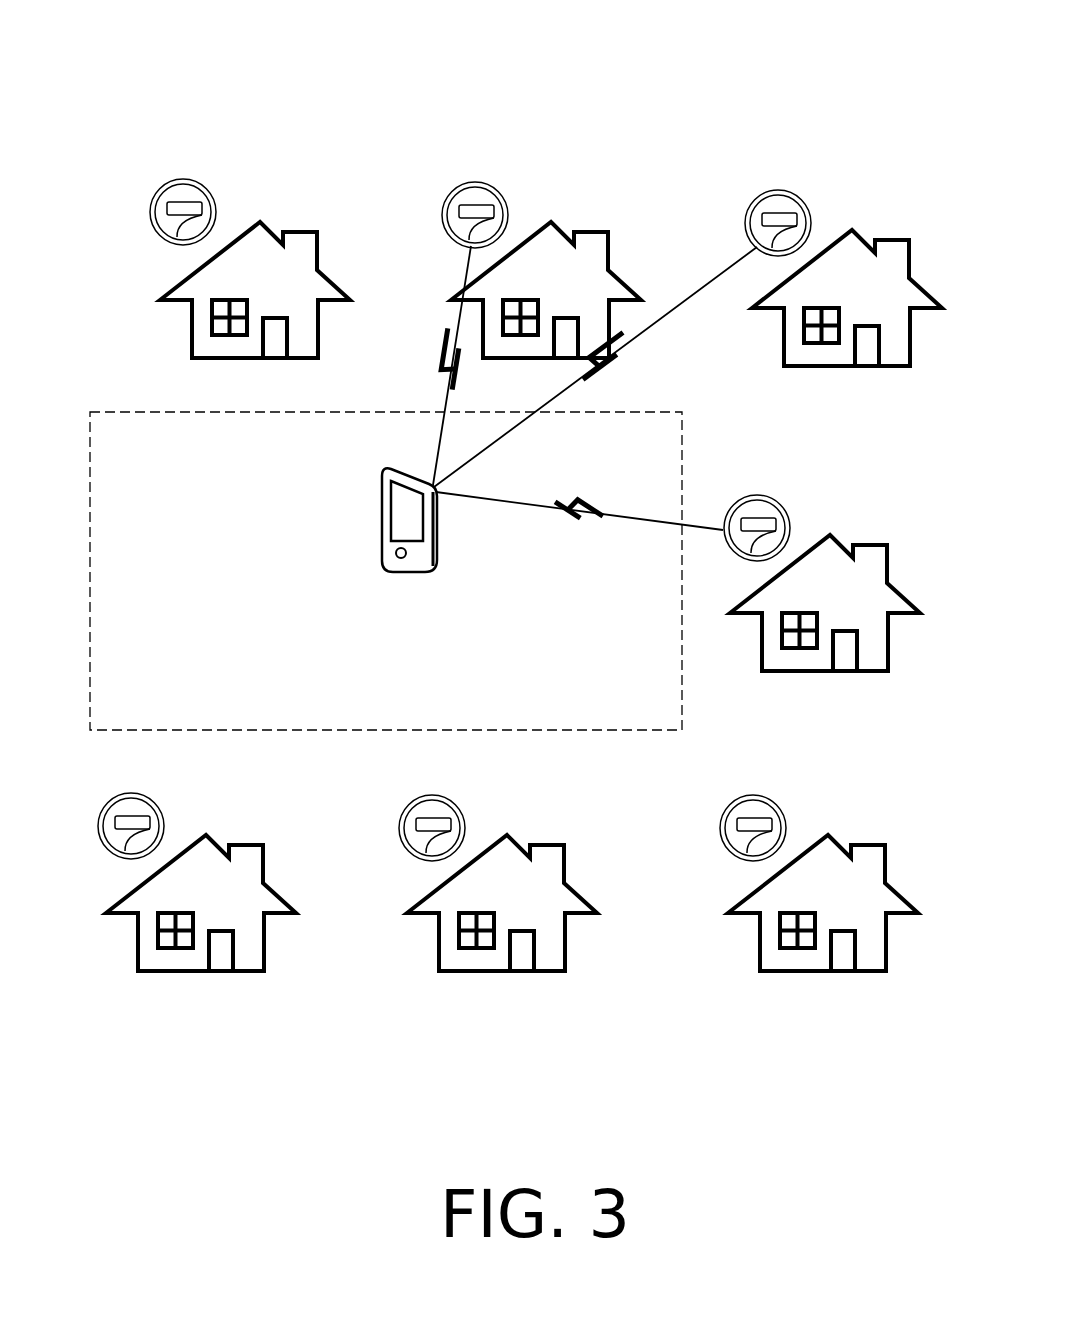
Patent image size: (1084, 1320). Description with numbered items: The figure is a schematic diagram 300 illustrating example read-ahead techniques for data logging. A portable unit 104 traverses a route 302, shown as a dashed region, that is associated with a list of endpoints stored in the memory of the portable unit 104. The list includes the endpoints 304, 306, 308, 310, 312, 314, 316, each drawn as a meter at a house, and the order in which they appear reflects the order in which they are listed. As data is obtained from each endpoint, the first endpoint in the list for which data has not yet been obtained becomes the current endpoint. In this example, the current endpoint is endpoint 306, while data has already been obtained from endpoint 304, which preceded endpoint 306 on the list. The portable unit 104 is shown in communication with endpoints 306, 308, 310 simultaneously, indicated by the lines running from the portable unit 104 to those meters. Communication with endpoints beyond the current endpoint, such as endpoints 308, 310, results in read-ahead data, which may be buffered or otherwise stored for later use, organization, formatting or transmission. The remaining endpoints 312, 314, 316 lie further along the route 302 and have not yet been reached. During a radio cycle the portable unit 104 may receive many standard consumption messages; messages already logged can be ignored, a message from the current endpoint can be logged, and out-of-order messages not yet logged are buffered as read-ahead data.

The schematic diagram 300 is at (812, 26).
The route 302 is at (225, 730).
The portable unit 104 is at (526, 607).
The endpoint 304 is at (173, 182).
The endpoint 306 is at (475, 182).
The endpoint 308 is at (779, 191).
The endpoint 310 is at (771, 500).
The endpoint 312 is at (756, 796).
The endpoint 314 is at (434, 796).
The endpoint 316 is at (132, 794).